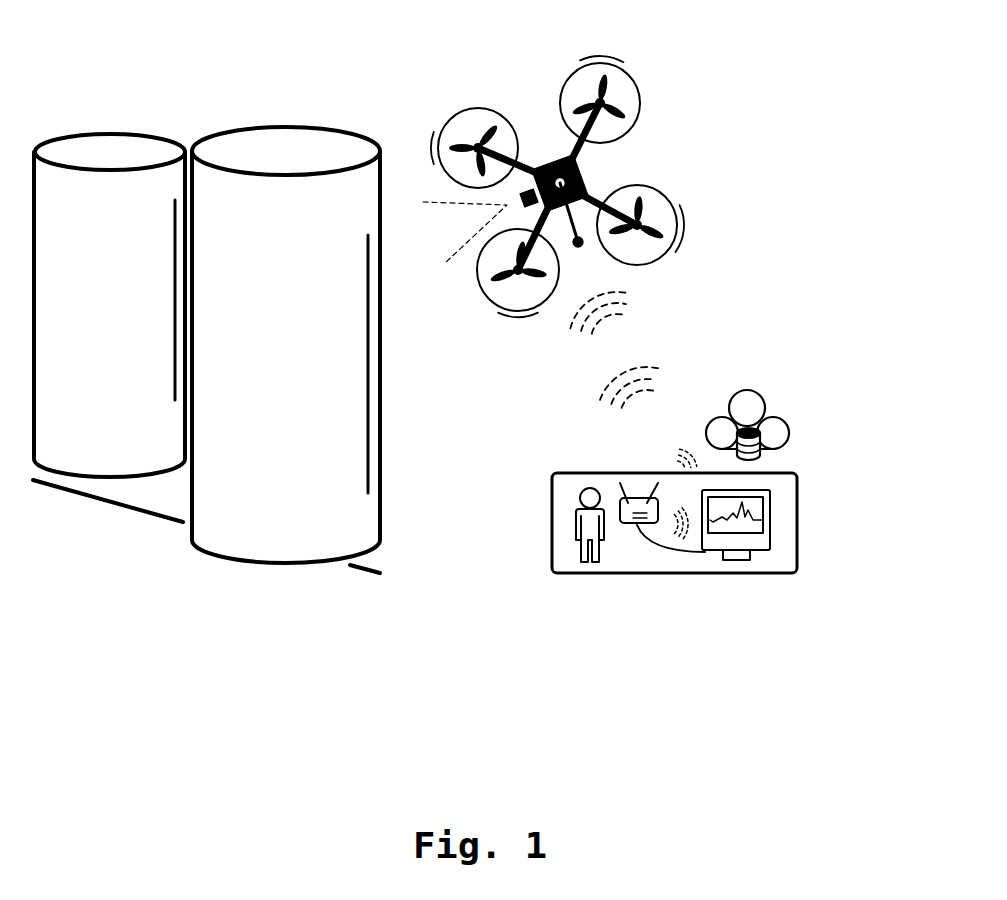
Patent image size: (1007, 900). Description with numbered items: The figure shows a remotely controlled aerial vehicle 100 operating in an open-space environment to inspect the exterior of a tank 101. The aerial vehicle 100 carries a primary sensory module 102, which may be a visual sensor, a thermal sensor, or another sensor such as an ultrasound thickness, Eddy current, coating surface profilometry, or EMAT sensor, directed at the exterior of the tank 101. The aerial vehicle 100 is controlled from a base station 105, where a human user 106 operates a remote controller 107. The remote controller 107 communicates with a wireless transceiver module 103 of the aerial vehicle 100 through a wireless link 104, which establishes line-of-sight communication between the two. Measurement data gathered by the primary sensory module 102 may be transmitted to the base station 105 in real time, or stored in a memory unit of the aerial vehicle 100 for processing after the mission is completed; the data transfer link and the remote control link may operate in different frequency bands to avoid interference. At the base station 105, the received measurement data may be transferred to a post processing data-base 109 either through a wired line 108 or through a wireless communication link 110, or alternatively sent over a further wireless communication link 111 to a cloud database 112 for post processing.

The aerial vehicle 100 is at (578, 167).
The tank 101 is at (272, 115).
The primary sensory module 102 is at (437, 227).
The wireless transceiver module 103 is at (543, 142).
The wireless link 104 is at (643, 352).
The base station 105 is at (803, 550).
The human user 106 is at (560, 532).
The remote controller 107 is at (608, 485).
The wired line 108 is at (675, 553).
The post processing data-base 109 is at (733, 562).
The wireless communication link 110 is at (677, 503).
The wireless communication link 111 is at (680, 447).
The cloud database 112 is at (803, 433).